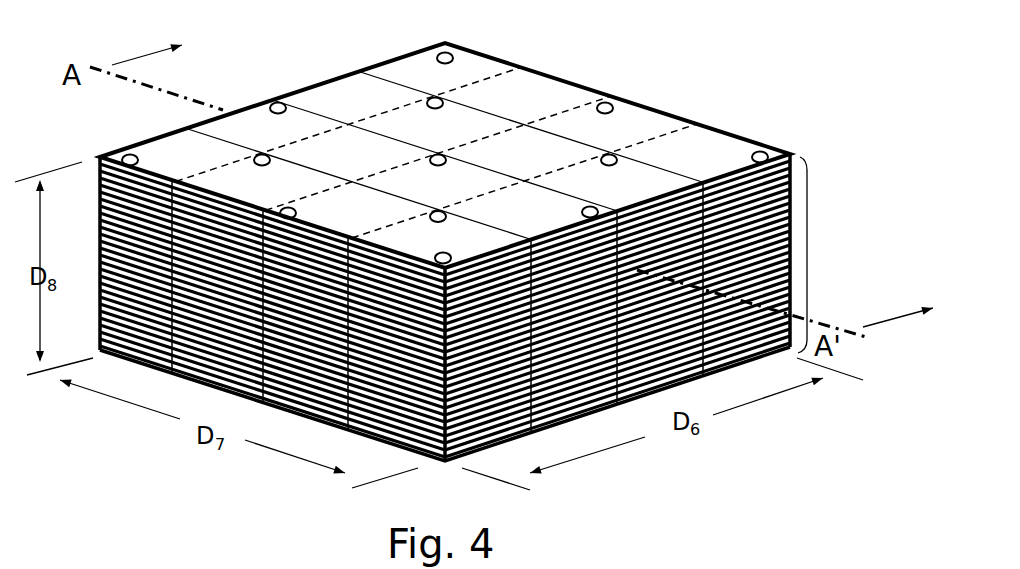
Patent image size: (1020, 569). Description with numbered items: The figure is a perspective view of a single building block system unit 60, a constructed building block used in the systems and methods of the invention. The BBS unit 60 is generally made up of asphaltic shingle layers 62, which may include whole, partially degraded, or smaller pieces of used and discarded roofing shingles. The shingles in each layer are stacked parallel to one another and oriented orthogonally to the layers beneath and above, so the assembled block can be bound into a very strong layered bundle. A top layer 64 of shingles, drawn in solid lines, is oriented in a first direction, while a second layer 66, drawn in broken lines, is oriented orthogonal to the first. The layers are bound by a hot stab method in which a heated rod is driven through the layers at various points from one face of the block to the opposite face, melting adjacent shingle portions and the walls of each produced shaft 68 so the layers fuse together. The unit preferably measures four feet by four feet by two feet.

The building block system (BBS) unit 60 is at (485, 230).
The asphaltic shingle layers 62 is at (807, 218).
The top layer 64 is at (680, 173).
The second layer 66 is at (549, 110).
The shaft 68 is at (436, 97).